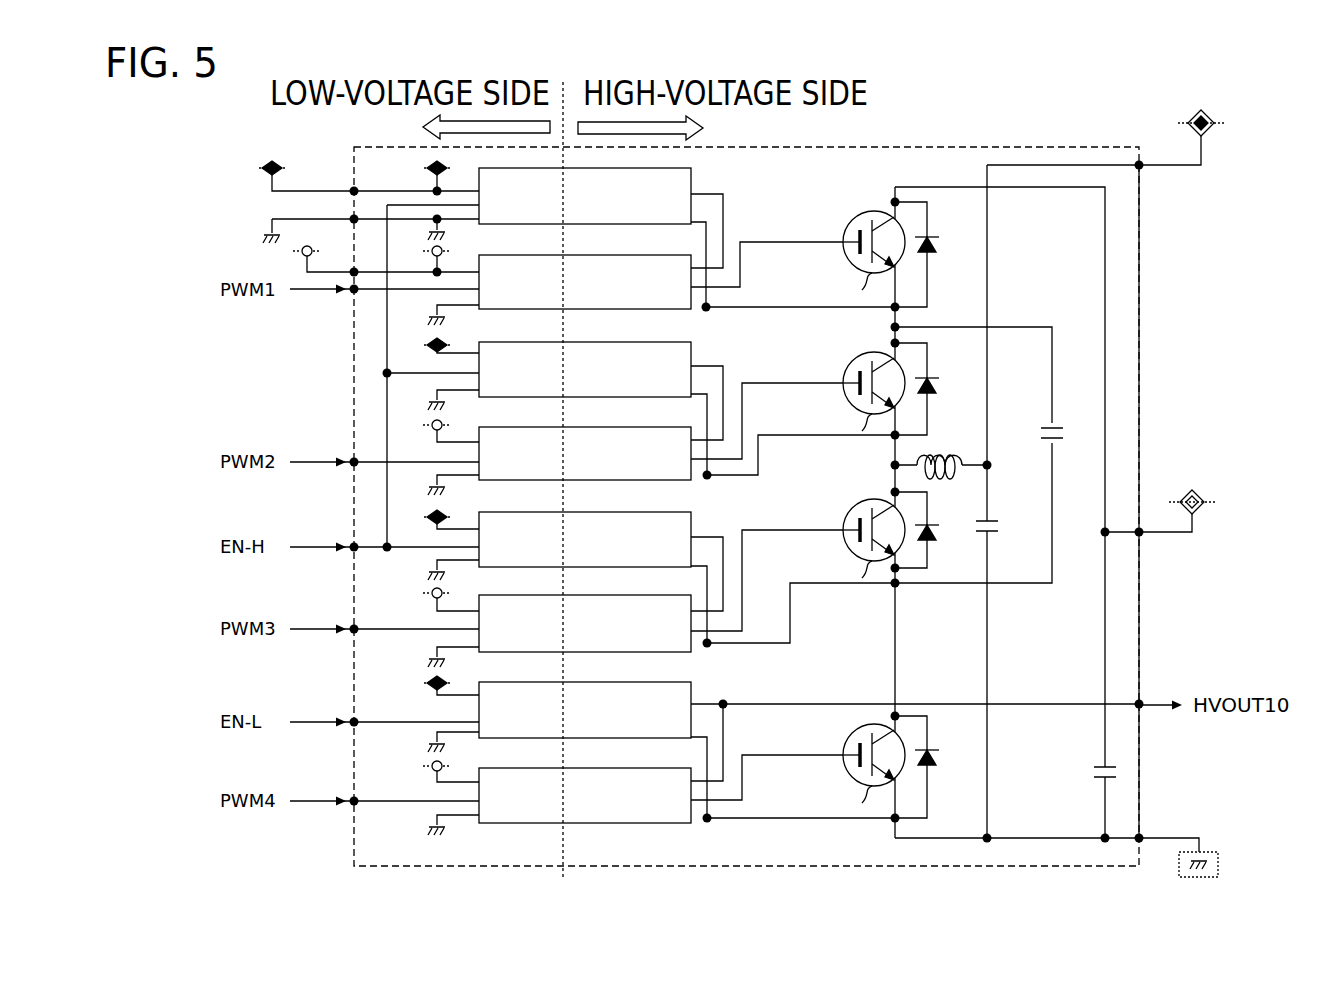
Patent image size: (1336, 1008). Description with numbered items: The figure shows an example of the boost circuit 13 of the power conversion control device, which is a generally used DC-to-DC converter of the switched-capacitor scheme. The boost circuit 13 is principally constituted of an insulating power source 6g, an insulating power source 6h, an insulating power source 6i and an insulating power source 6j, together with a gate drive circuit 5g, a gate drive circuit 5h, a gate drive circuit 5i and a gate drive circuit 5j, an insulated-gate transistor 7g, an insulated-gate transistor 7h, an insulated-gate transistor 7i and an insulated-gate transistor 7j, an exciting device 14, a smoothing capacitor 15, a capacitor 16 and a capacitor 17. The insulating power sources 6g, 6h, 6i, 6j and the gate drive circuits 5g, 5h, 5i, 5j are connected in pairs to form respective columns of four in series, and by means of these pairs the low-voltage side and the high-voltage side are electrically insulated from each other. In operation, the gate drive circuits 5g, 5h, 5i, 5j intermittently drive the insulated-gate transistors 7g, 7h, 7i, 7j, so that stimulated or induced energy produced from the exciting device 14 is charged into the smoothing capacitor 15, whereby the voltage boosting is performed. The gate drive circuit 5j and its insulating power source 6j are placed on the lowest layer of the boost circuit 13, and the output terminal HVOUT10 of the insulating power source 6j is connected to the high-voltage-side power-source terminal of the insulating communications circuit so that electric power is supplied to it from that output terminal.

The boost circuit 13 is at (352, 852).
The gate drive circuit 5g is at (524, 311).
The gate drive circuit 5h is at (524, 481).
The gate drive circuit 5i is at (524, 653).
The gate drive circuit 5j is at (524, 824).
The insulating power source 6g is at (694, 184).
The insulating power source 6h is at (694, 352).
The insulating power source 6i is at (694, 522).
The insulating power source 6j is at (694, 690).
The insulated-gate transistor 7g is at (852, 224).
The insulated-gate transistor 7h is at (852, 366).
The insulated-gate transistor 7i is at (852, 512).
The insulated-gate transistor 7j is at (852, 750).
The exciting device 14 is at (946, 450).
The smoothing capacitor 15 is at (1053, 424).
The capacitor 16 is at (996, 535).
The capacitor 17 is at (1093, 776).